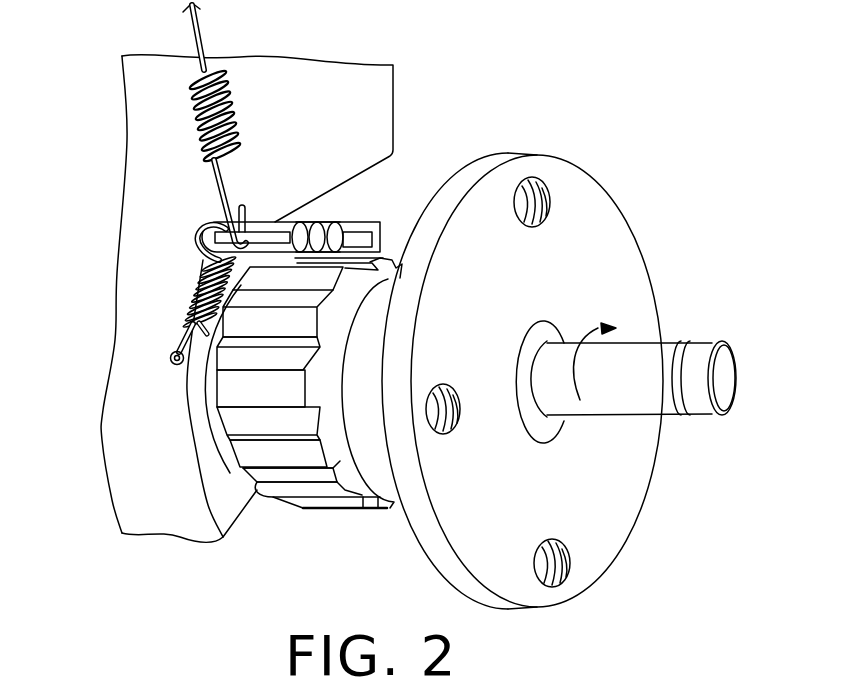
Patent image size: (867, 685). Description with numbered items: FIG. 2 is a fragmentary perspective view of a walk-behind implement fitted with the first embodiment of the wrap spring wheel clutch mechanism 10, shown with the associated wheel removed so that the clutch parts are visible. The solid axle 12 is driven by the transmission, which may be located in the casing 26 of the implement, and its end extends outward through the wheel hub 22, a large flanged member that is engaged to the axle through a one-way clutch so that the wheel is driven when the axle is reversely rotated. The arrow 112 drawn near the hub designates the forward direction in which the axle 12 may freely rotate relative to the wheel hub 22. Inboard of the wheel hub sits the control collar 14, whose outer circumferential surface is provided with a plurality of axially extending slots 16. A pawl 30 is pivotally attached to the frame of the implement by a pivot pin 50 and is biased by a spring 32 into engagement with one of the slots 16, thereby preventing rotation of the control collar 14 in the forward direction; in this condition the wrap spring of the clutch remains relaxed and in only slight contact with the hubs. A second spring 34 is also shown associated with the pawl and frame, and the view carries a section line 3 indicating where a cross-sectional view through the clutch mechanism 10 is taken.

The clutch mechanism 10 is at (558, 84).
The axle 12 is at (722, 357).
The control collar 14 is at (312, 506).
The slots 16 is at (282, 472).
The wheel hub 22 is at (618, 252).
The casing 26 is at (302, 80).
The pawl 30 is at (362, 228).
The spring 32 is at (196, 293).
The spring 34 is at (193, 115).
The pivot pin 50 is at (337, 232).
The arrow 112 is at (594, 327).
The section line 3- 3 is at (45, 380).